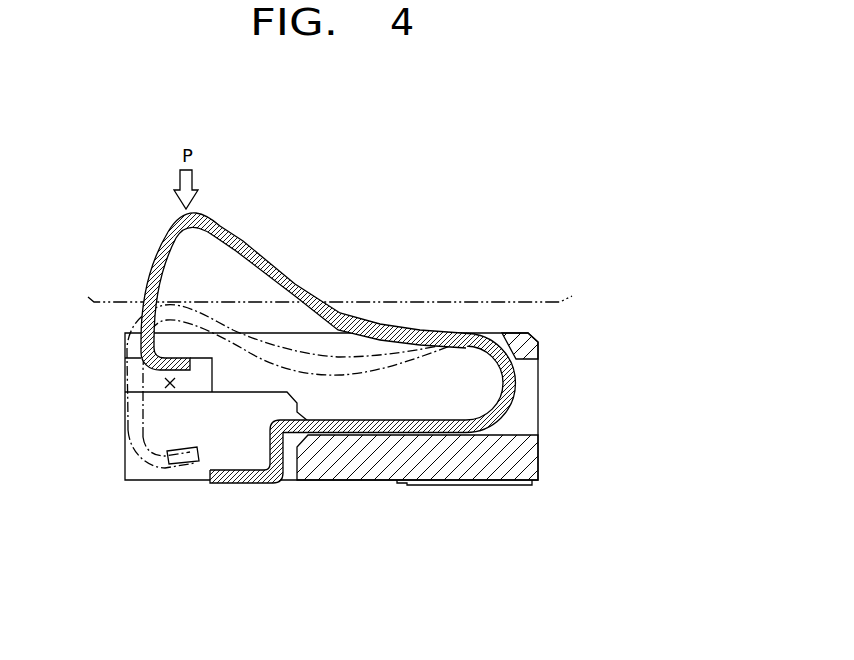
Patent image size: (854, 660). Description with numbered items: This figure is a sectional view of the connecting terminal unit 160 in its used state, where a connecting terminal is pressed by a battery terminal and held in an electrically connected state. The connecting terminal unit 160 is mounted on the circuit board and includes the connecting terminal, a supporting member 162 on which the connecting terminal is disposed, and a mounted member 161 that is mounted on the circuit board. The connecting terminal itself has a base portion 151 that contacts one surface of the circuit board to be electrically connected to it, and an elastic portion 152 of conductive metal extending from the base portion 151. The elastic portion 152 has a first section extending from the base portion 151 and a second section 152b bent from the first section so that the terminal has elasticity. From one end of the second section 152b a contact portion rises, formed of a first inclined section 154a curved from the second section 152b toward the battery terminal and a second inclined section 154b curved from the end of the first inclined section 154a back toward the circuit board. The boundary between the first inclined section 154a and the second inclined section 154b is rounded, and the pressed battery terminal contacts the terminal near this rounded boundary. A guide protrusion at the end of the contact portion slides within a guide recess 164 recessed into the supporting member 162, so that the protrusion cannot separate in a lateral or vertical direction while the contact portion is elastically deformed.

The base portion 151 is at (243, 484).
The elastic portion 152 is at (399, 319).
The second section 152b is at (382, 428).
The first inclined section 154a is at (243, 247).
The second inclined section 154b is at (157, 252).
The connecting terminal unit 160 is at (331, 455).
The mounted member 161 is at (440, 484).
The supporting member 162 is at (513, 468).
The guide recess 164 is at (167, 472).